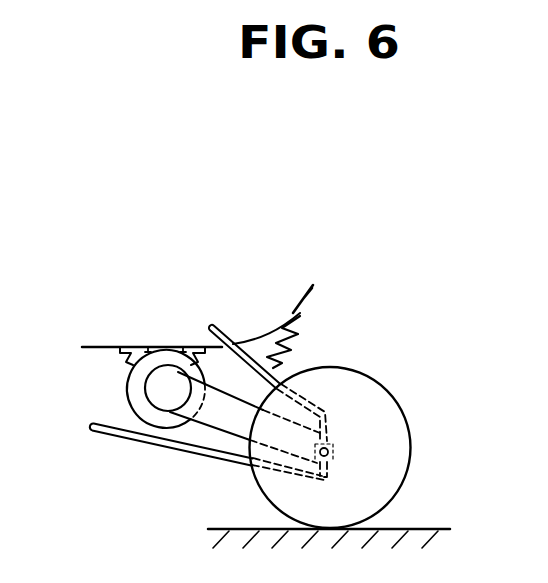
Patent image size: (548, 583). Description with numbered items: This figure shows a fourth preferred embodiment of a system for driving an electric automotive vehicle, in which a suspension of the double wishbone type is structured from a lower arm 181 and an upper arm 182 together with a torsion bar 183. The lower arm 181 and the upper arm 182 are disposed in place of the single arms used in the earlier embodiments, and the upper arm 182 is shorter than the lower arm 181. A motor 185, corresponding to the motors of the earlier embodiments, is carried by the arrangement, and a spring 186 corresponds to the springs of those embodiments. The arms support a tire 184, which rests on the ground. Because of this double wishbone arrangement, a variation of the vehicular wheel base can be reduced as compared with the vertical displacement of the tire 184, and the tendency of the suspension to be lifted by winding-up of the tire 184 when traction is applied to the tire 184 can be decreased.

The lower arm 181 is at (152, 443).
The upper arm 182 is at (272, 372).
The torsion bar 183 is at (329, 450).
The tire 184 is at (395, 425).
The motor 185 is at (131, 396).
The spring 186 is at (298, 318).